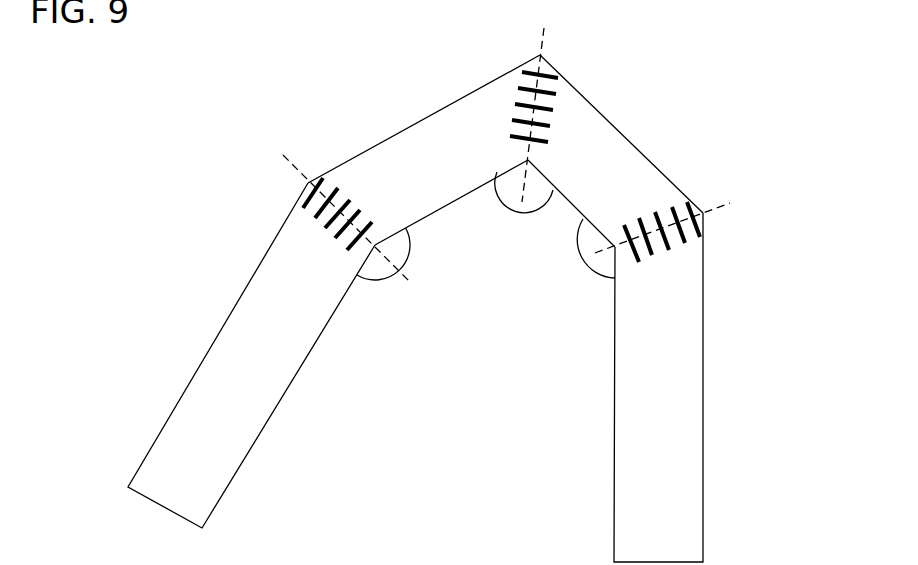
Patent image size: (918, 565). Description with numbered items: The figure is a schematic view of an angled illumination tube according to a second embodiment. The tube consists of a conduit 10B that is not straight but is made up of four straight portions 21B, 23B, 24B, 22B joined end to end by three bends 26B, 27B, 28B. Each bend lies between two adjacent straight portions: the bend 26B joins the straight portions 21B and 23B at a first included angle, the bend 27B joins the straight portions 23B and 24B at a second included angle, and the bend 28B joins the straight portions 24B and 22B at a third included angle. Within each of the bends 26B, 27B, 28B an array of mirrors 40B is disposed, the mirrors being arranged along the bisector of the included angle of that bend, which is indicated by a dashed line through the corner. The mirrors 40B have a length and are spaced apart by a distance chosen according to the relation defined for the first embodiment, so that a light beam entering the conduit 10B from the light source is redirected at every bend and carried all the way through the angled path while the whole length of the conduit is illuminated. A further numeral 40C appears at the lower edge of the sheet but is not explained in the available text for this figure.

The conduit 10B is at (428, 112).
The straight portion 21B is at (188, 383).
The straight portion 22B is at (703, 433).
The straight portion 23B is at (395, 130).
The straight portion 24B is at (603, 112).
The bend 26B is at (297, 190).
The bend 27B is at (538, 55).
The bend 28B is at (700, 207).
The mirrors 40B is at (740, 275).
The stitching / seam 40C is at (438, 559).